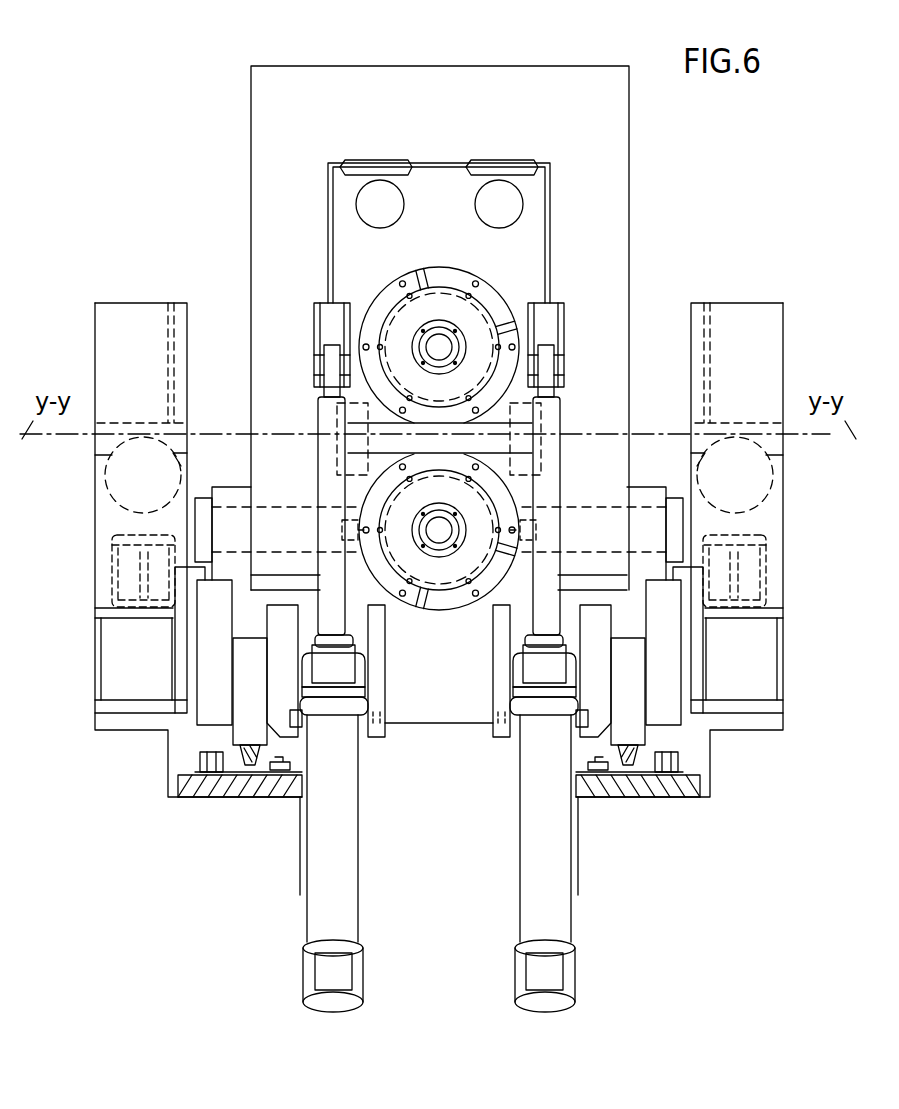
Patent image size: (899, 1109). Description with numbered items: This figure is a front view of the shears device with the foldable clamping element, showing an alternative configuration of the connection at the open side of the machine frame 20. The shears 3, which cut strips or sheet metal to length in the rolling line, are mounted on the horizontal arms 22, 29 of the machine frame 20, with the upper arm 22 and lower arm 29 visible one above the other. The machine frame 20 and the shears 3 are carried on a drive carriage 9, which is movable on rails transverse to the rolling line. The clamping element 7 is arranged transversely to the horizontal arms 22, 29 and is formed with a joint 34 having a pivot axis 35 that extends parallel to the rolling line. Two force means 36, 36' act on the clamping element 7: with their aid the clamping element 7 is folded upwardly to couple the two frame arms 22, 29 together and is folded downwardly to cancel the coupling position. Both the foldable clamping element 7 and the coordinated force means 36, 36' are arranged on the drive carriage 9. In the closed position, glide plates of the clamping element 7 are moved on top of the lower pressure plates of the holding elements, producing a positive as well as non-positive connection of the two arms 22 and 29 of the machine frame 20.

The clamping element 7 is at (507, 97).
The horizontal arm 22 is at (453, 243).
The shears 3 is at (380, 278).
The machine frame 20 is at (516, 272).
The horizontal arm 29 is at (452, 661).
The joint 34 is at (235, 489).
The pivot axis 35 is at (613, 529).
The drive carriage 9 is at (406, 698).
The force means 36 is at (350, 704).
The force means 36' is at (524, 704).